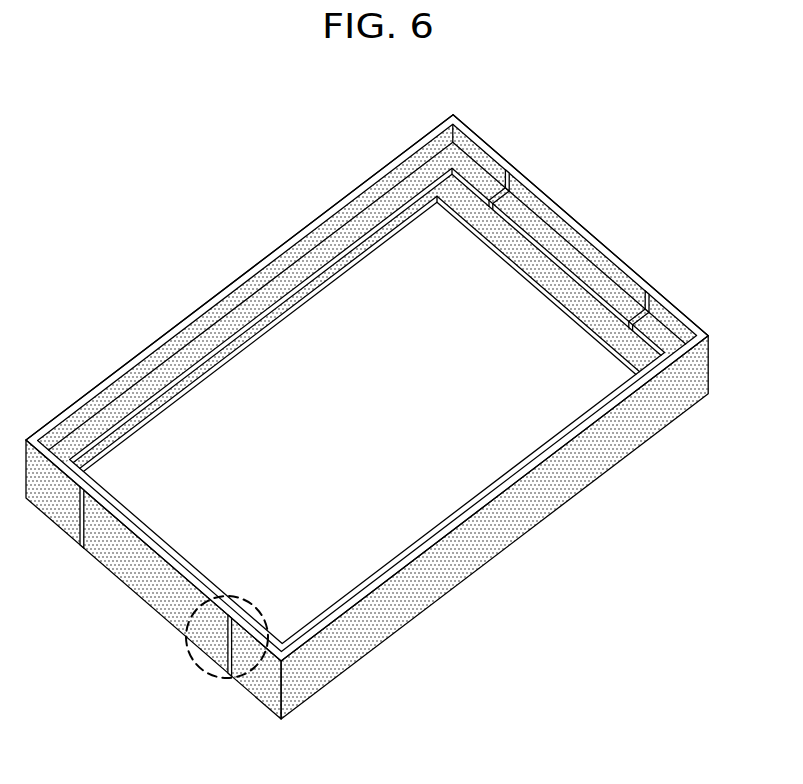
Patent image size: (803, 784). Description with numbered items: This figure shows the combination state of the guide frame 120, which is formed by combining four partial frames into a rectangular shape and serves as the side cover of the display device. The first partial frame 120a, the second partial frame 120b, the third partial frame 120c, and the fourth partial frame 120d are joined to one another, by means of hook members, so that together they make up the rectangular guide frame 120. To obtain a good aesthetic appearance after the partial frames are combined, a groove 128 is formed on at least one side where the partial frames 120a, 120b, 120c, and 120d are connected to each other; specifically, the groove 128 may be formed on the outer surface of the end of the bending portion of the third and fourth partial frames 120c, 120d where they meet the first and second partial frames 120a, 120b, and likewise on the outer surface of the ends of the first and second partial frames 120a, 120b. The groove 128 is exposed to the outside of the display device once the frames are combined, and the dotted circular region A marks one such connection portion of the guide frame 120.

The guide frame 120 is at (379, 419).
The first partial frame 120a is at (195, 544).
The second partial frame 120b is at (630, 218).
The third partial frame 120c is at (178, 298).
The fourth partial frame 120d is at (509, 604).
The groove 128 is at (507, 166).
The detail region A is at (193, 664).